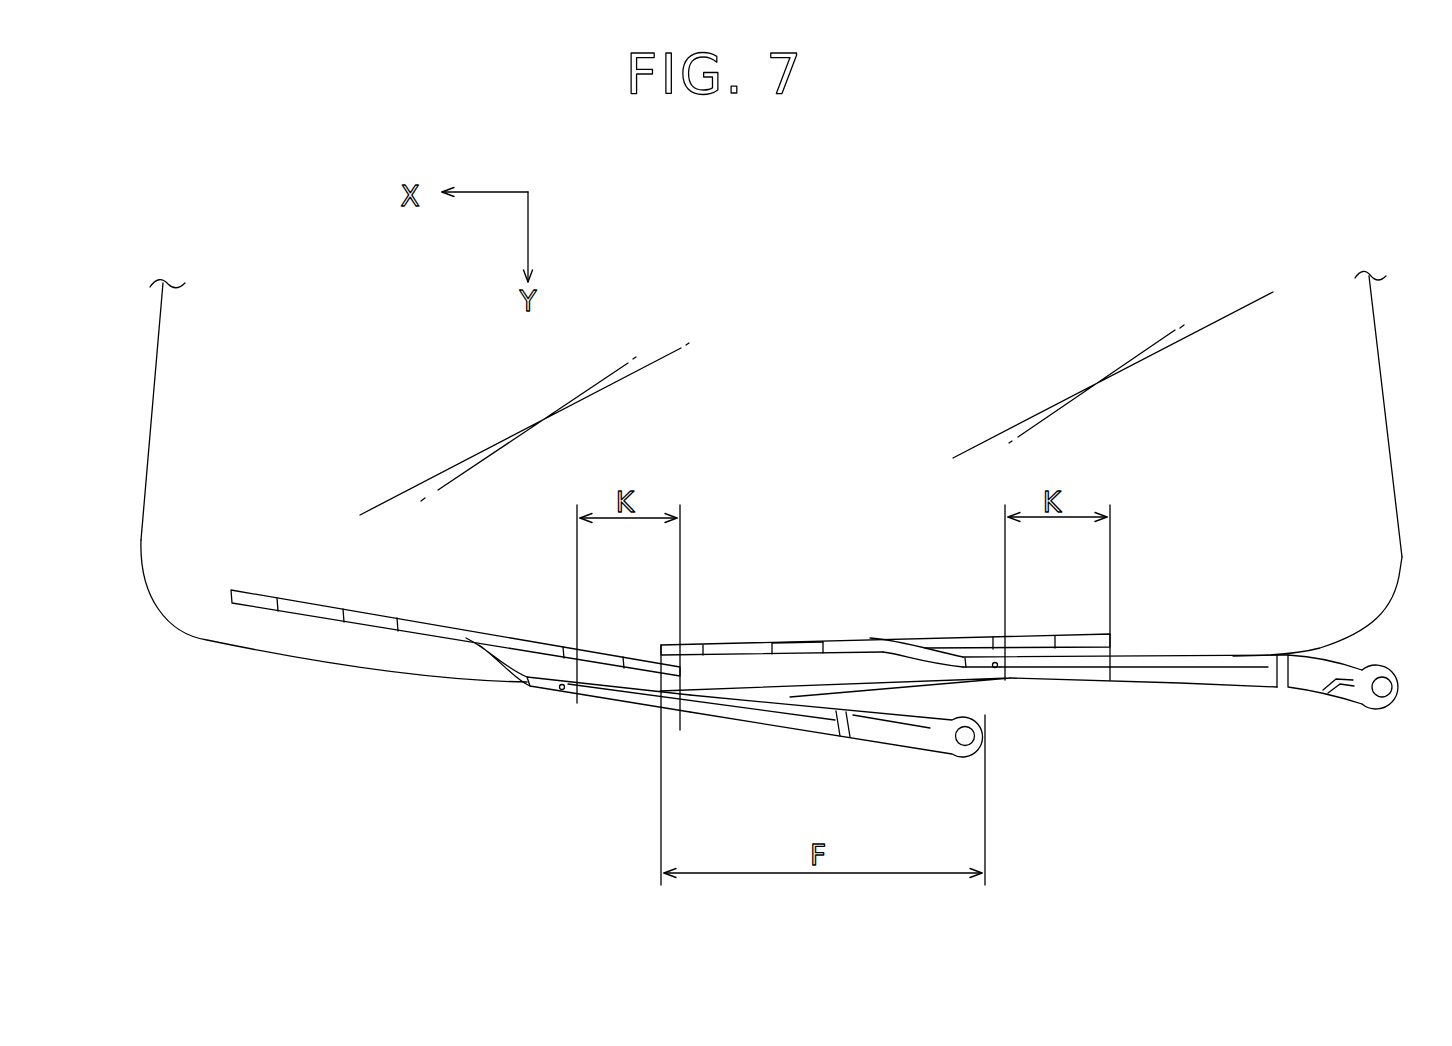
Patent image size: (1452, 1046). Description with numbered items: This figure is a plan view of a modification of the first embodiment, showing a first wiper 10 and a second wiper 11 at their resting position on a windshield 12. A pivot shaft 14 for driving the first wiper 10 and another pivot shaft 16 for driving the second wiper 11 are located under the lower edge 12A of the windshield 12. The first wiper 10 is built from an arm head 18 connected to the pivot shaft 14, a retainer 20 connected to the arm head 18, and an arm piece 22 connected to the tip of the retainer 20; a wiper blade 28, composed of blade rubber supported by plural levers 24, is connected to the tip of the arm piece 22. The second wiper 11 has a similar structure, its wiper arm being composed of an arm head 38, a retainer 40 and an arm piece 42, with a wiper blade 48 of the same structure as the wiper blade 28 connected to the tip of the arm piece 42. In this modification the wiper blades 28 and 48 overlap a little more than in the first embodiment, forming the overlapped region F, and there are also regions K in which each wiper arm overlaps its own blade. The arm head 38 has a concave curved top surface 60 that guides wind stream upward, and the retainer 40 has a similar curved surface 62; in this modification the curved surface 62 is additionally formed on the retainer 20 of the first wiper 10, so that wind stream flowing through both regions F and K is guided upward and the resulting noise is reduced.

The first wiper 10 is at (1137, 538).
The second wiper 11 is at (363, 578).
The windshield 12 is at (1370, 358).
The lower edge of windshield 12A is at (997, 681).
The pivot shaft 14 is at (1379, 706).
The pivot shaft 16 is at (958, 752).
The arm head 18 is at (1342, 662).
The retainer 20 is at (1216, 654).
The arm piece 22 is at (924, 650).
The levers 24 is at (301, 600).
The wiper blade 28 is at (790, 641).
The arm head 38 is at (852, 740).
The retainer 40 is at (606, 708).
The arm piece 42 is at (472, 652).
The wiper blade 48 is at (268, 630).
The curved surface 60 is at (883, 730).
The curved surface 62 is at (703, 702).